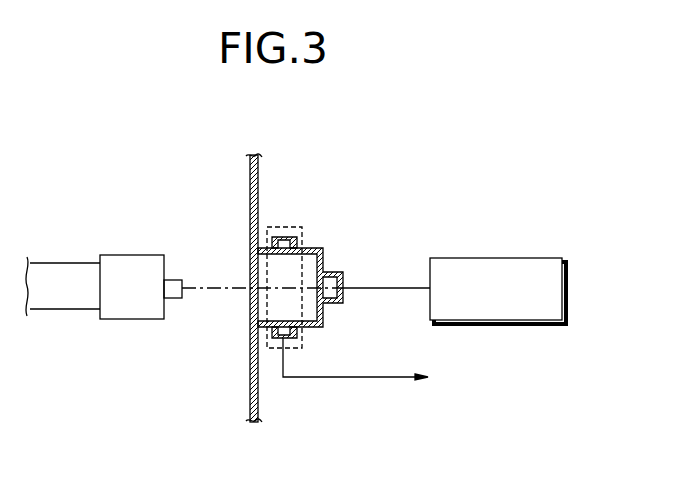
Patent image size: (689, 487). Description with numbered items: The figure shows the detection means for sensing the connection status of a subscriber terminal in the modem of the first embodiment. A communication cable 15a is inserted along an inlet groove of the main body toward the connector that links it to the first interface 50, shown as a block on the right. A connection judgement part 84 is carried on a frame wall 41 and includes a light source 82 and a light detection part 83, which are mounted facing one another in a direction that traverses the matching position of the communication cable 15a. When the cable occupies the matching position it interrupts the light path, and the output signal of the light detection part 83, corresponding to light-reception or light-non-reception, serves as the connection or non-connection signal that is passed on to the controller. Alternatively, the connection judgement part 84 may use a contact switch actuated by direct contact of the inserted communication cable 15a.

The communication cable 15a is at (127, 262).
The frame wall 41 is at (250, 167).
The light source 82 is at (282, 237).
The light detection part 83 is at (300, 337).
The connection judgement part 84 is at (301, 241).
The first interface 50 is at (566, 290).